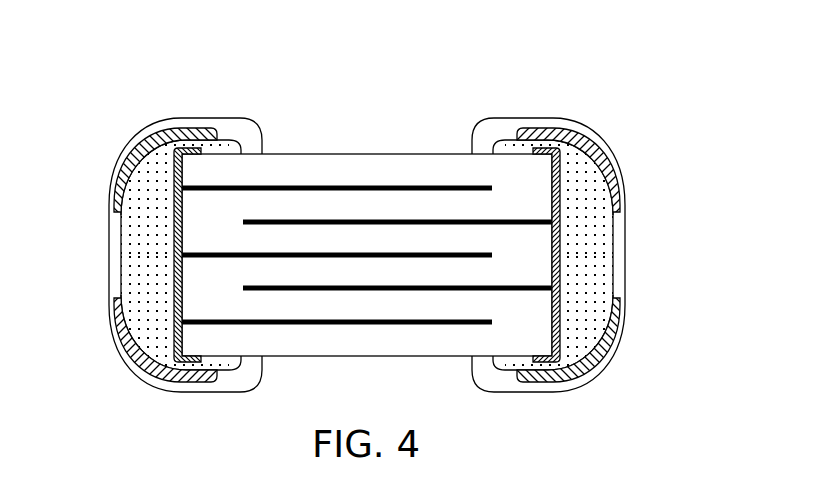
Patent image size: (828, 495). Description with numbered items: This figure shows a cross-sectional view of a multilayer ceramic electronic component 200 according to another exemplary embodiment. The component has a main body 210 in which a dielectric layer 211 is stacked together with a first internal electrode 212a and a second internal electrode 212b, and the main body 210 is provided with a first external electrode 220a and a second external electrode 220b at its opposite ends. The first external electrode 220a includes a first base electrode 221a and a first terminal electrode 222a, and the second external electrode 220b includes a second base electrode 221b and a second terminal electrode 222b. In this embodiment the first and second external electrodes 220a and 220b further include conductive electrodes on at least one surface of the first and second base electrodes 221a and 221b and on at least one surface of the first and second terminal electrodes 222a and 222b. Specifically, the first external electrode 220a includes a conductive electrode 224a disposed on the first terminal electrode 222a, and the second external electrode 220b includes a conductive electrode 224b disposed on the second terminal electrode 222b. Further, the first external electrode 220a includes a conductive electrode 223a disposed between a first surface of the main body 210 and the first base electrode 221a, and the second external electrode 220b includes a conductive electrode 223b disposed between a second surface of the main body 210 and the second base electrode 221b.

The multilayer ceramic electronic component 200 is at (387, 21).
The main body 210 is at (455, 152).
The dielectric layer 211 is at (403, 176).
The first internal electrode 212a is at (284, 186).
The second internal electrode 212b is at (352, 220).
The first external electrode 220a is at (205, 106).
The second external electrode 220b is at (529, 104).
The first base electrode 221a is at (148, 259).
The second base electrode 221b is at (588, 258).
The first terminal electrode 222a is at (125, 149).
The second terminal electrode 222b is at (612, 150).
The conductive electrode 223a is at (172, 281).
The conductive electrode 223b is at (560, 287).
The conductive electrode 224a is at (117, 227).
The conductive electrode 224b is at (617, 226).